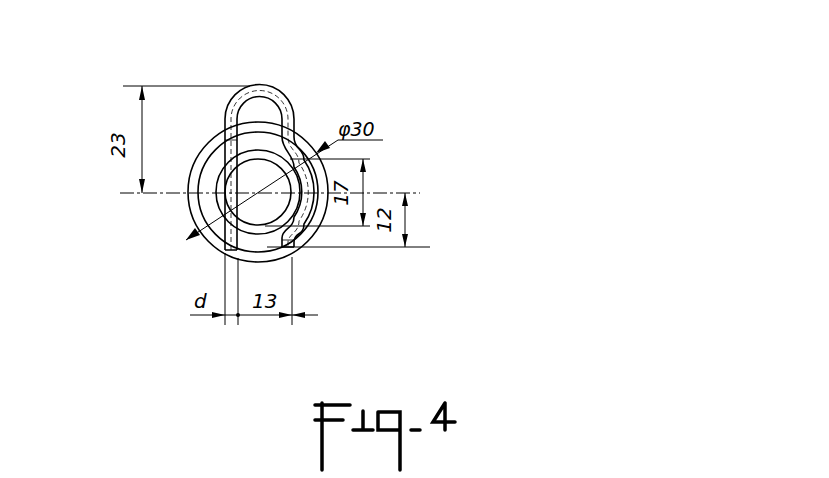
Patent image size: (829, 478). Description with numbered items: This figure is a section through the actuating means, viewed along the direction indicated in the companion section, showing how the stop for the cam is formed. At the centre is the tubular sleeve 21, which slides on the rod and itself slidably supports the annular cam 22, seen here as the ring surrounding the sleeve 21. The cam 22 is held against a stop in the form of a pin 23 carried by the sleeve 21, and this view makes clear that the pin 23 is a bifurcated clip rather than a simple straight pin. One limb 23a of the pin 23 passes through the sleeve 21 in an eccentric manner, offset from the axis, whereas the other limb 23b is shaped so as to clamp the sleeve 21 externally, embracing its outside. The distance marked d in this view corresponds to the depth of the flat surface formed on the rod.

The inner ring 21 is at (214, 195).
The outer ring 22 is at (296, 143).
The spring clip 23 is at (272, 92).
The straight leg of clip 23a is at (228, 149).
The hooked leg of clip 23b is at (305, 208).